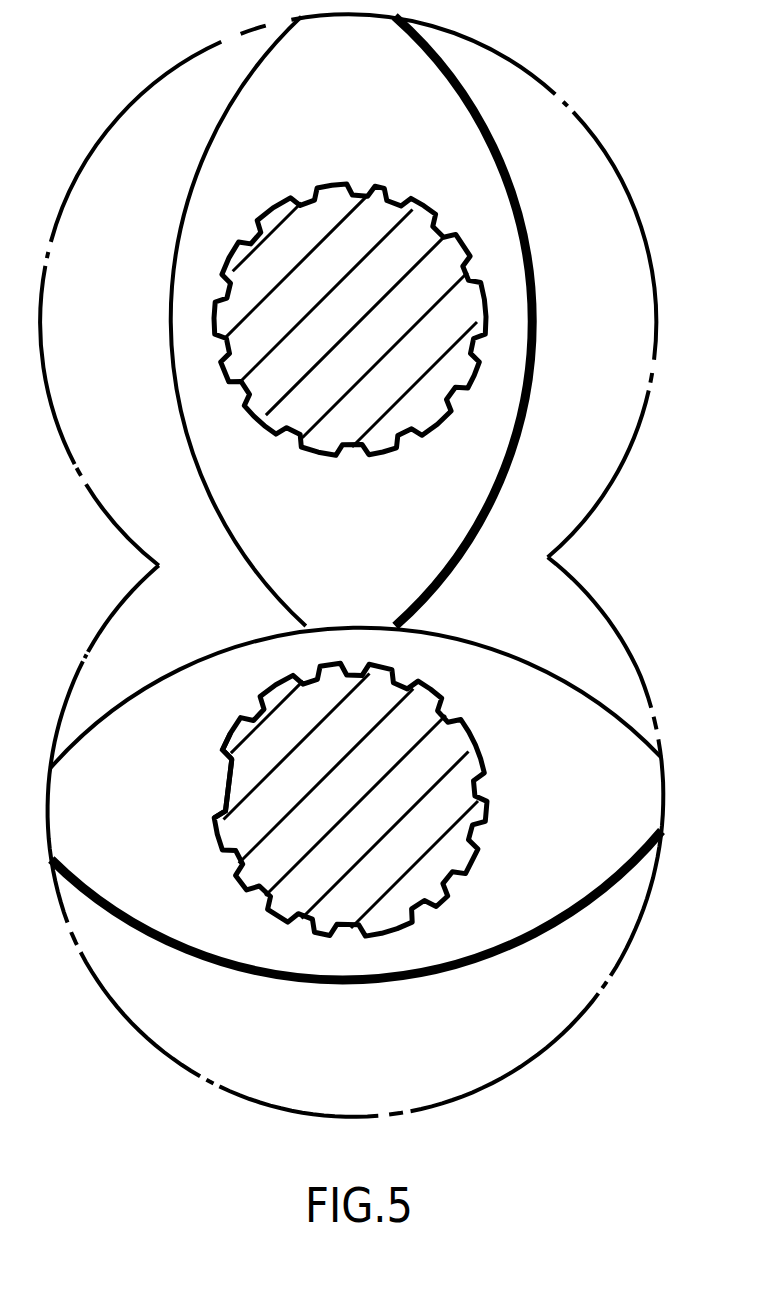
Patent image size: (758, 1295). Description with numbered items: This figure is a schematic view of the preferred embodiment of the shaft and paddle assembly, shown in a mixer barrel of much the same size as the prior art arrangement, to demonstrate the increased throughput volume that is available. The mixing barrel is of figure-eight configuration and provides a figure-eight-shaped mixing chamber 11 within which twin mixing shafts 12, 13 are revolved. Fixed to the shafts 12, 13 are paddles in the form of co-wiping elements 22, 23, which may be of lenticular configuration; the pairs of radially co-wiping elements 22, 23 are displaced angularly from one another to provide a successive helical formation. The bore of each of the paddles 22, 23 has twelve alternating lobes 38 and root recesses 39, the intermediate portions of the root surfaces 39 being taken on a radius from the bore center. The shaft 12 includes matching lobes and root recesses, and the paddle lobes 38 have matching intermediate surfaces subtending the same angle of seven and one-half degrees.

The mixing chamber 11 is at (580, 163).
The mixing shaft 12 is at (447, 308).
The mixing shaft 13 is at (397, 868).
The co-wiping element 22 is at (445, 147).
The co-wiping element 23 is at (528, 692).
The lobe 38 is at (222, 798).
The root recess 39 is at (220, 767).